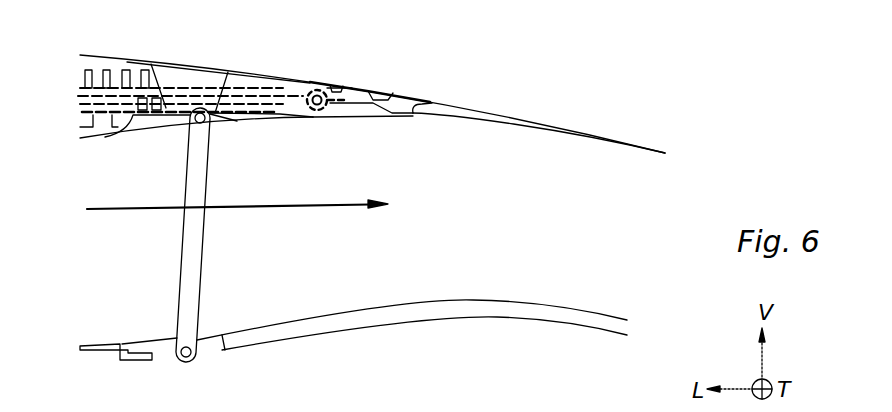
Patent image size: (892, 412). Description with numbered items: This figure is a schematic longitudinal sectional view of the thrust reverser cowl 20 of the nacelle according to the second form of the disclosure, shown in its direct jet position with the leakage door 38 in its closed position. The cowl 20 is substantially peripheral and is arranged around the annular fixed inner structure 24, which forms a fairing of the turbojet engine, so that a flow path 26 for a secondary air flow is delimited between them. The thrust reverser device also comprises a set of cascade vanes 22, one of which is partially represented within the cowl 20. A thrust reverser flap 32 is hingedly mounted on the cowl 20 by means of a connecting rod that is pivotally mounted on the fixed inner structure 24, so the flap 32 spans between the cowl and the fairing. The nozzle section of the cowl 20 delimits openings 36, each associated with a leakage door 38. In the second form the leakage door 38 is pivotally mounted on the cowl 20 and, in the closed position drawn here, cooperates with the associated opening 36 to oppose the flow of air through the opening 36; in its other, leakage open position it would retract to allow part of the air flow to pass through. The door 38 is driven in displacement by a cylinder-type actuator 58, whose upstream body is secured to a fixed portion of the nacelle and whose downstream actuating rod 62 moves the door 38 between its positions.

The thrust reverser cowl 20 is at (269, 40).
The cascade vanes 22 is at (104, 68).
The fixed inner structure 24 is at (483, 300).
The flow path 26 is at (540, 225).
The thrust reverser flaps 32 is at (143, 138).
The openings 36 is at (415, 78).
The leakage door 38 is at (376, 68).
The actuator 58 is at (72, 120).
The actuating rod 62 is at (292, 93).